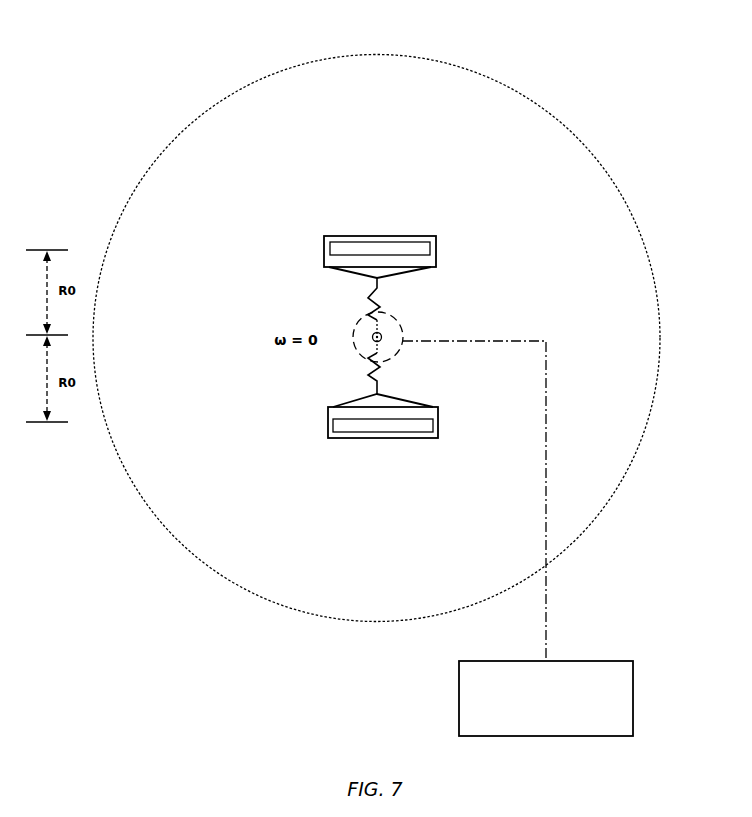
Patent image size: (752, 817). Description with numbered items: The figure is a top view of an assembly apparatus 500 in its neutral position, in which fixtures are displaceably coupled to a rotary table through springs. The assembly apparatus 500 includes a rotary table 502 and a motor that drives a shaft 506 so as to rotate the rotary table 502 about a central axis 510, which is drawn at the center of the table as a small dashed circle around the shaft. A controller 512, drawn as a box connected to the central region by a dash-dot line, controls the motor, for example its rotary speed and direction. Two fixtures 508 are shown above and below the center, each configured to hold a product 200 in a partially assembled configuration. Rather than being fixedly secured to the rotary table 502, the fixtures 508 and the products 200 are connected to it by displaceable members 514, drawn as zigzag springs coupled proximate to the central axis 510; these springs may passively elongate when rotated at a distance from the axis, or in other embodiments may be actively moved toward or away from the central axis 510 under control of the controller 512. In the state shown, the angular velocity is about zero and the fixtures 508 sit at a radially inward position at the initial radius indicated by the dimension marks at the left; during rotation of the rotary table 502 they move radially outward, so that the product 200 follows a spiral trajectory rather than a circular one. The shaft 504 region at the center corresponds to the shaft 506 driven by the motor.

The assembly apparatus 500 is at (180, 60).
The rotary table 502 is at (143, 173).
The shaft 504 is at (361, 354).
The shaft 506 is at (372, 334).
The fixture 508 is at (353, 236).
The central axis 510 is at (382, 335).
The controller 512 is at (584, 661).
The displaceable member 514 is at (368, 303).
The product 200 is at (364, 256).